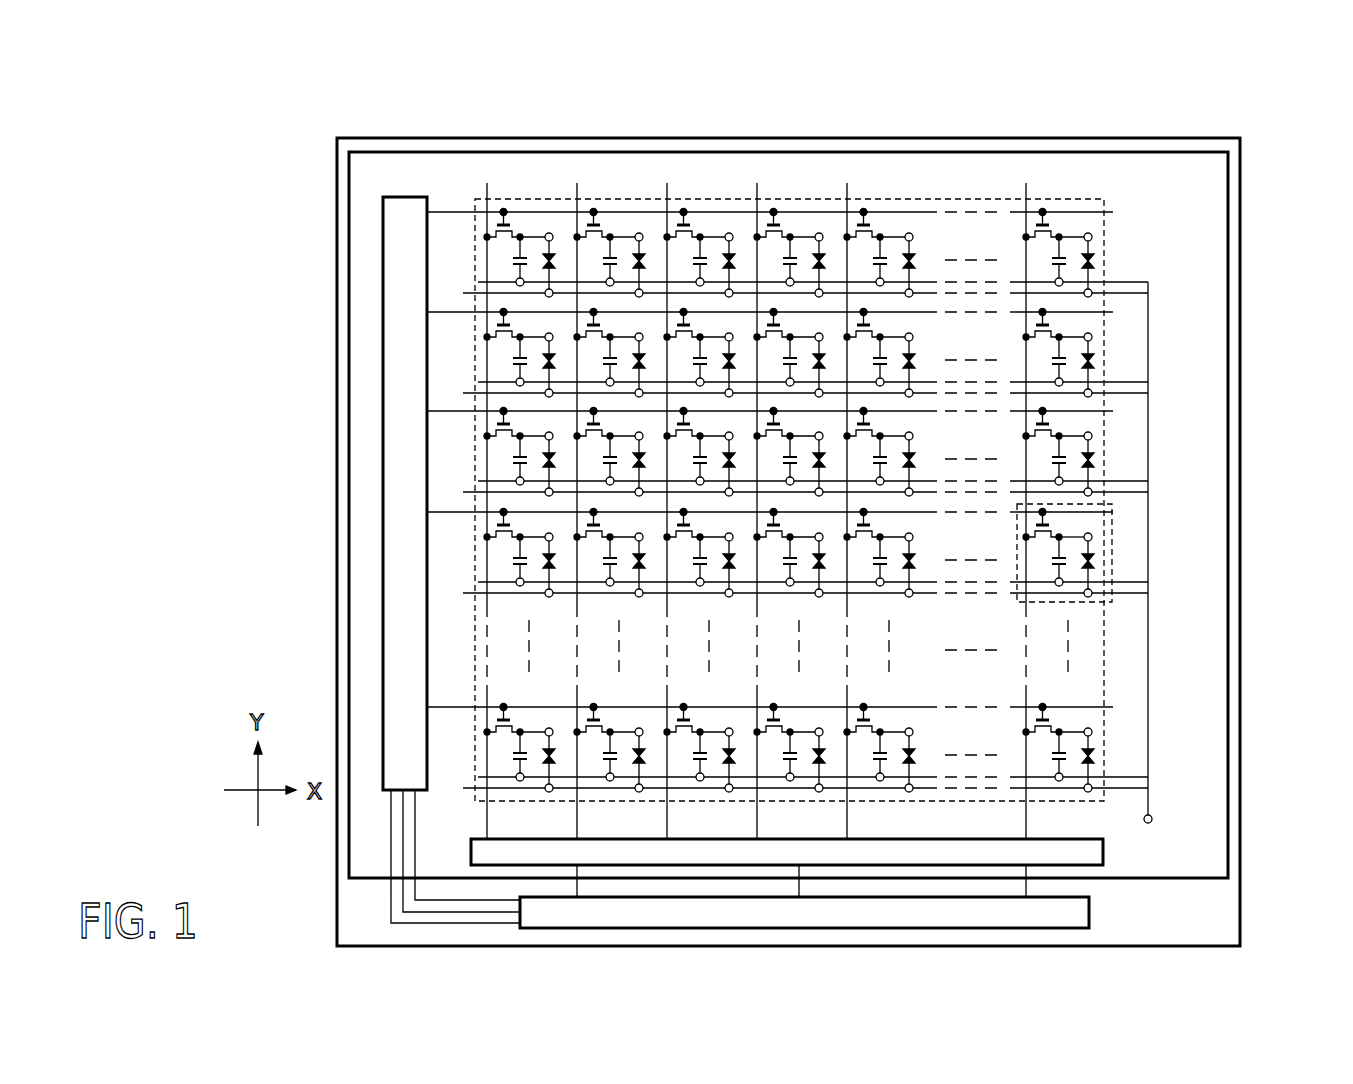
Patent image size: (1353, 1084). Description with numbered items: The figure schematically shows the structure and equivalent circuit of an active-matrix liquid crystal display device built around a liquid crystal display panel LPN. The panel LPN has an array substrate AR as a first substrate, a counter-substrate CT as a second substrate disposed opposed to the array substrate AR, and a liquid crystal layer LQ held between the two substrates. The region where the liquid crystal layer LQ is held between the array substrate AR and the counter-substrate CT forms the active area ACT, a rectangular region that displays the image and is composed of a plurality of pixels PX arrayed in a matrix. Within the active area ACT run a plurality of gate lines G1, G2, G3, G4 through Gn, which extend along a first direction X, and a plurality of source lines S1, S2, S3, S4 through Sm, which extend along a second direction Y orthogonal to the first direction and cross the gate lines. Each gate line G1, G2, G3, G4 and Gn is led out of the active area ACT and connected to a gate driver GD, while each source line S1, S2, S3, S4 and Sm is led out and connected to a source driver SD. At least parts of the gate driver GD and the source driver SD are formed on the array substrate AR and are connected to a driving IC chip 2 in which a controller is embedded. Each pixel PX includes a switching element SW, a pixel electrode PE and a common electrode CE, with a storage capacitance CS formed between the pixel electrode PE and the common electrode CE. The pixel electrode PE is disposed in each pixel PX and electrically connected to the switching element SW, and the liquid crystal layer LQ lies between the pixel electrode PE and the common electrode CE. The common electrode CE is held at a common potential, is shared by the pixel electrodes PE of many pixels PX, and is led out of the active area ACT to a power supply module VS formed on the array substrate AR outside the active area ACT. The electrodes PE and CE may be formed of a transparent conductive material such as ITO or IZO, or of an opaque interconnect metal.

The liquid crystal display panel LPN is at (831, 499).
The array substrate AR is at (1209, 913).
The counter-substrate CT is at (1229, 178).
The active area ACT is at (1104, 335).
The gate driver GD is at (383, 627).
The source driver SD is at (1105, 852).
The driving IC chip 2 is at (1090, 914).
The gate line G1 is at (443, 212).
The gate line G2 is at (443, 312).
The gate line G3 is at (443, 411).
The gate line G4 is at (443, 512).
The gate line Gn is at (443, 707).
The source line S1 is at (489, 823).
The source line S2 is at (579, 823).
The source line S3 is at (669, 823).
The source line S4 is at (759, 823).
The source line Sm is at (1028, 823).
The power supply module VS is at (1152, 814).
The pixel PX is at (1070, 563).
The switching element SW is at (1024, 529).
The pixel electrode PE is at (1092, 538).
The storage capacitance CS is at (1046, 563).
The common electrode CE is at (1091, 592).
The liquid crystal layer LQ is at (1096, 552).